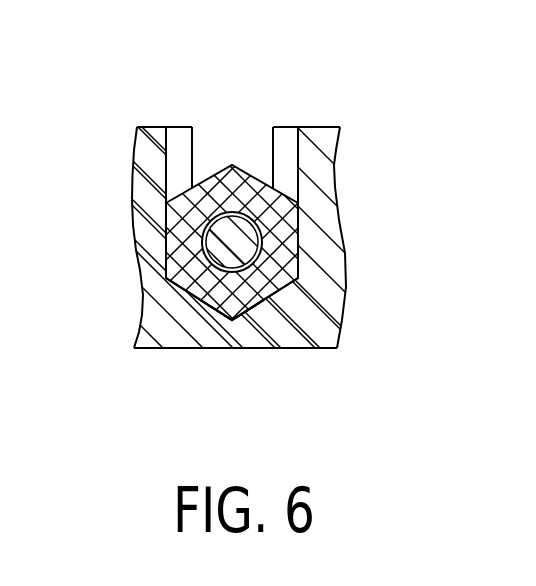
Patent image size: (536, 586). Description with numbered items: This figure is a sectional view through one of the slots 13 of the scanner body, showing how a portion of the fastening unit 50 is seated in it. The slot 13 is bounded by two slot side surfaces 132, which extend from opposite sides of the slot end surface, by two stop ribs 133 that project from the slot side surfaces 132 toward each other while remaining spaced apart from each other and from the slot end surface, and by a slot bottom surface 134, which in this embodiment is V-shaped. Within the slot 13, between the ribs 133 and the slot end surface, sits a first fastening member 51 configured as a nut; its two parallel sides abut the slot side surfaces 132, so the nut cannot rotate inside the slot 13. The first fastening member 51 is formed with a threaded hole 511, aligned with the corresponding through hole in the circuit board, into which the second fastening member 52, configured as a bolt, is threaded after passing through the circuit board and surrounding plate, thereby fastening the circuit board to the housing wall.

The slot 13 is at (229, 150).
The stop ribs 133 is at (286, 148).
The slot side surfaces 132 is at (298, 192).
The slot bottom surface 134 is at (263, 305).
The fastening unit 50 is at (133, 277).
The first fastening member 51 is at (185, 273).
The threaded hole 511 is at (226, 271).
The second fastening member 52 is at (228, 237).